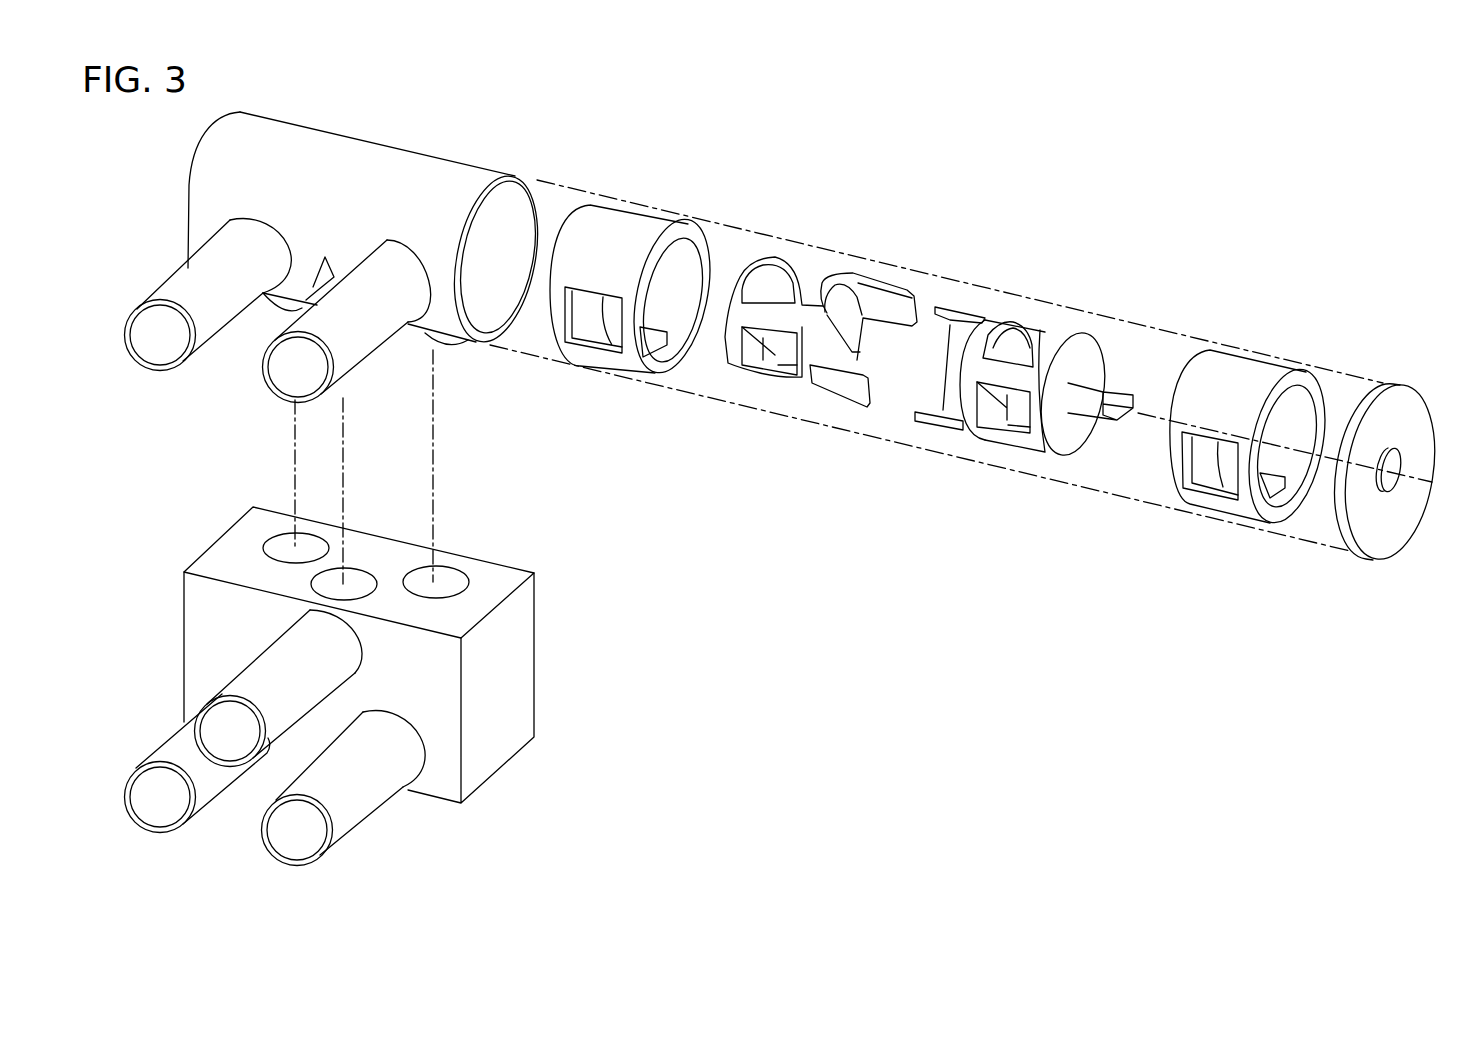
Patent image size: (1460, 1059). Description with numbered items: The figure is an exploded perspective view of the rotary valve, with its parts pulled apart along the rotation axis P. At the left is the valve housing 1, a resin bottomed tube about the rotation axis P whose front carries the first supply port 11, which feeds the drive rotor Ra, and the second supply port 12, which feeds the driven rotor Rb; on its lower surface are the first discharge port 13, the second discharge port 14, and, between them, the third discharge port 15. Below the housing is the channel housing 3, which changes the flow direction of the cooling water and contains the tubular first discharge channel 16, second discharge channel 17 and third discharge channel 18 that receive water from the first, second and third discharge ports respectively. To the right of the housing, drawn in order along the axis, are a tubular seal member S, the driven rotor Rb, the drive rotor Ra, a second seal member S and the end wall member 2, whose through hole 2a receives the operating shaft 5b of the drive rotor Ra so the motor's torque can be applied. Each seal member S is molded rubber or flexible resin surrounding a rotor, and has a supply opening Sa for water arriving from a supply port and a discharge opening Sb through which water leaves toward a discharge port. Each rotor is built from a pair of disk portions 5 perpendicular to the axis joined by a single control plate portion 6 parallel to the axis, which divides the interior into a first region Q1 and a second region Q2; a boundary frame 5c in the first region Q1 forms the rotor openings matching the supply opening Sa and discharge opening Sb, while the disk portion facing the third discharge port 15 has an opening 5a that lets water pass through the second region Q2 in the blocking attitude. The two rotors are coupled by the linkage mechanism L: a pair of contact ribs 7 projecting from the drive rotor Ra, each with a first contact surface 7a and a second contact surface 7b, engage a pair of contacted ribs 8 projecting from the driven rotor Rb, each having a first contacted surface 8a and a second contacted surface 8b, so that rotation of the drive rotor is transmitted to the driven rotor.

The valve housing 1 is at (447, 150).
The end wall member 2 is at (1408, 415).
The through hole 2a is at (1393, 480).
The channel housing 3 is at (537, 656).
The disk portion 5 is at (913, 377).
The opening 5a is at (832, 318).
The operating shaft 5b is at (1104, 390).
The boundary frame 5c is at (790, 384).
The control plate portion 6 is at (780, 357).
The contact rib 7 is at (945, 408).
The first contact surface 7a is at (970, 330).
The second contact surface 7b is at (920, 427).
The contacted rib 8 is at (883, 297).
The first contacted surface 8a is at (827, 365).
The second contacted surface 8b is at (868, 292).
The first supply port 11 is at (373, 340).
The second supply port 12 is at (162, 275).
The first discharge port 13 is at (447, 347).
The second discharge port 14 is at (263, 313).
The third discharge port 15 is at (318, 287).
The first discharge channel 16 is at (374, 799).
The second discharge channel 17 is at (168, 740).
The third discharge channel 18 is at (260, 650).
The linkage mechanism L is at (948, 293).
The rotation axis P is at (1445, 489).
The first region Q1 is at (783, 355).
The second region Q2 is at (805, 266).
The drive rotor Ra is at (987, 442).
The driven rotor Rb is at (767, 390).
The seal member S is at (648, 214).
The supply opening Sa is at (590, 307).
The discharge opening Sb is at (650, 347).